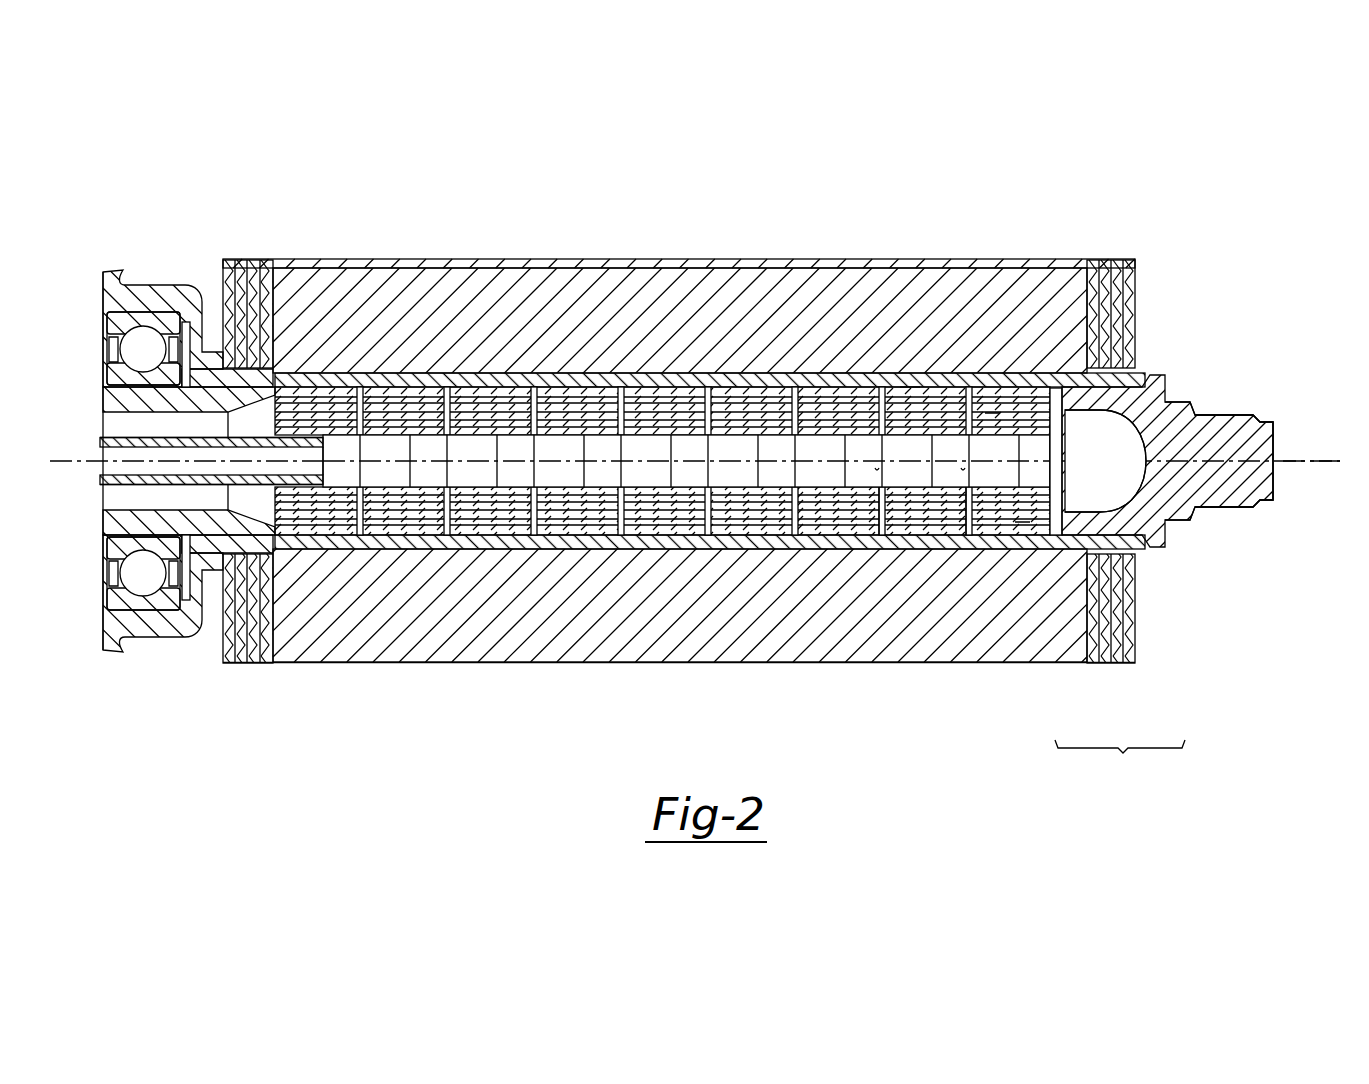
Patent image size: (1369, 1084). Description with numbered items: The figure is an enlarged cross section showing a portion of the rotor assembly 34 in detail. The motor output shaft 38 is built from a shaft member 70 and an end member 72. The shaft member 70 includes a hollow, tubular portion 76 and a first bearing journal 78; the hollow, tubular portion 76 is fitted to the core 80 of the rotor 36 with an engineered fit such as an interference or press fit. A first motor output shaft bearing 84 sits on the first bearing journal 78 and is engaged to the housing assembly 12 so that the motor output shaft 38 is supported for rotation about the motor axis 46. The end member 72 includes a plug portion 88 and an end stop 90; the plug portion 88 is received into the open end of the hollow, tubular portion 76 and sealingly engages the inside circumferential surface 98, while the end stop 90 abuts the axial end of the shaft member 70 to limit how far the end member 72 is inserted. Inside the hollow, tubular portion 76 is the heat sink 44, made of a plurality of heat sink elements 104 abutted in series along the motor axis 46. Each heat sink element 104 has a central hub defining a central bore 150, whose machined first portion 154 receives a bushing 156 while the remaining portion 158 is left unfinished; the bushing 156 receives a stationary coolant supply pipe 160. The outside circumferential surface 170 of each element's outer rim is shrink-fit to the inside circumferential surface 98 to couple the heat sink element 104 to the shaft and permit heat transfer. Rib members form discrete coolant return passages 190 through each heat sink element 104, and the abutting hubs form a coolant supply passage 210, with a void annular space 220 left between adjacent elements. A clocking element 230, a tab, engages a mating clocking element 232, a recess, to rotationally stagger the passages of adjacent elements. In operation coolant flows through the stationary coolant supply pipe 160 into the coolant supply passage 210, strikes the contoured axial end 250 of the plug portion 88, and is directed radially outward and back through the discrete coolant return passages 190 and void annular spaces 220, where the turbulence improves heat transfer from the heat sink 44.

The housing assembly 12 is at (110, 302).
The rotor assembly 34 is at (1043, 214).
The rotor 36 is at (447, 634).
The motor output shaft 38 is at (1120, 763).
The heat sink 44 is at (593, 522).
The motor axis 46 is at (1303, 460).
The shaft member 70 is at (1057, 552).
The end member 72 is at (1182, 503).
The hollow, tubular portion 76 is at (643, 549).
The first bearing journal 78 is at (133, 395).
The core 80 is at (497, 635).
The first motor output shaft bearing 84 is at (113, 543).
The plug portion 88 is at (1127, 405).
The end stop 90 is at (1165, 387).
The inside circumferential surface 98 is at (1080, 393).
The heat sink element 104 is at (483, 398).
The central bore 150 is at (337, 474).
The first portion of the central bore 154 is at (297, 486).
The bushing 156 is at (302, 437).
The remaining portion of the central bore 158 is at (332, 490).
The stationary coolant supply pipe 160 is at (210, 483).
The outside circumferential surface 170 is at (910, 387).
The discrete coolant return passages 190 is at (993, 413).
The coolant supply passage 210 is at (680, 480).
The void annular space 220 is at (707, 390).
The clocking element 230 is at (877, 471).
The mating clocking element 232 is at (878, 498).
The axial end 250 is at (1107, 507).